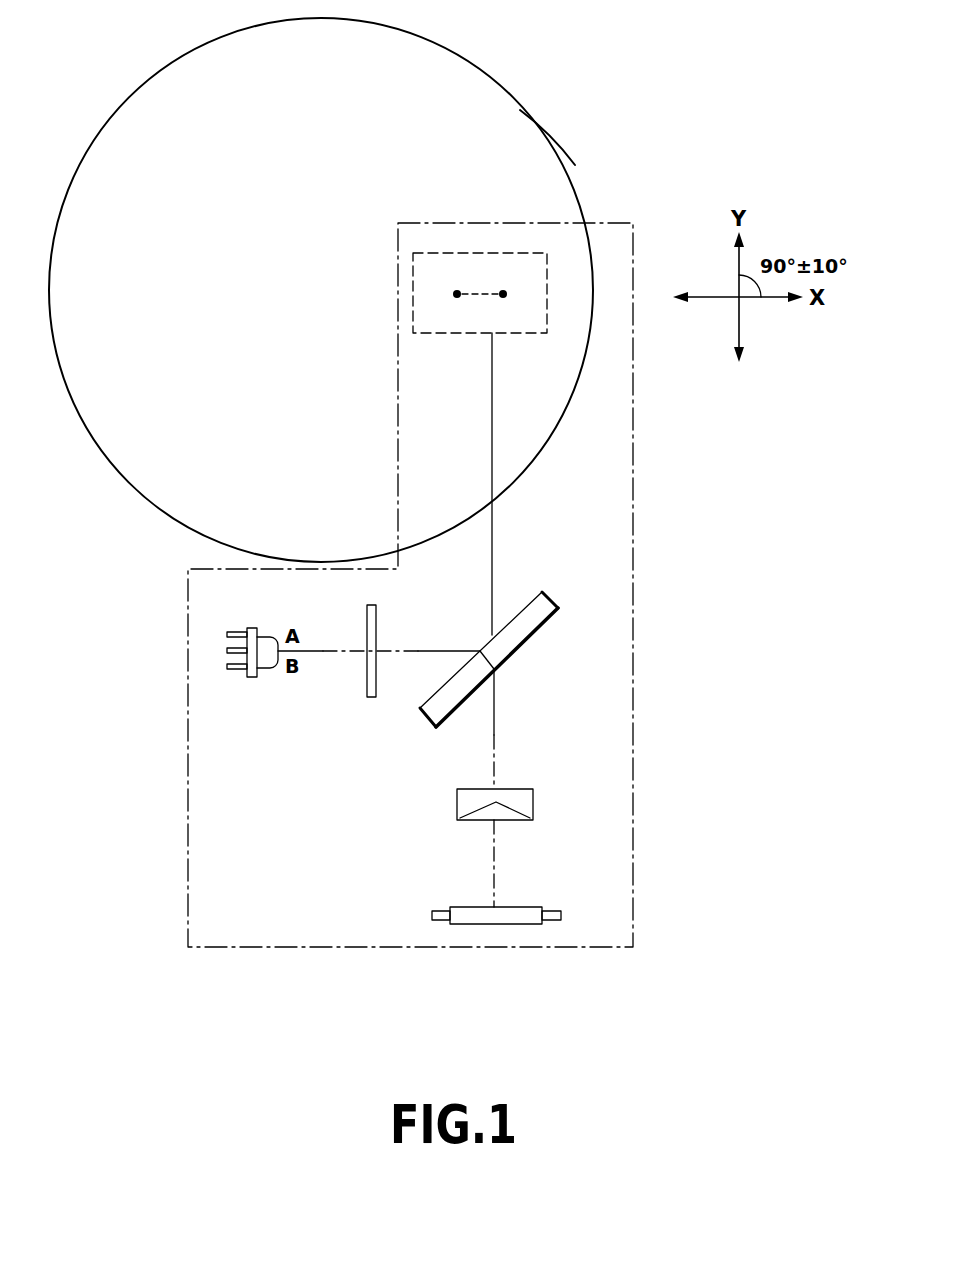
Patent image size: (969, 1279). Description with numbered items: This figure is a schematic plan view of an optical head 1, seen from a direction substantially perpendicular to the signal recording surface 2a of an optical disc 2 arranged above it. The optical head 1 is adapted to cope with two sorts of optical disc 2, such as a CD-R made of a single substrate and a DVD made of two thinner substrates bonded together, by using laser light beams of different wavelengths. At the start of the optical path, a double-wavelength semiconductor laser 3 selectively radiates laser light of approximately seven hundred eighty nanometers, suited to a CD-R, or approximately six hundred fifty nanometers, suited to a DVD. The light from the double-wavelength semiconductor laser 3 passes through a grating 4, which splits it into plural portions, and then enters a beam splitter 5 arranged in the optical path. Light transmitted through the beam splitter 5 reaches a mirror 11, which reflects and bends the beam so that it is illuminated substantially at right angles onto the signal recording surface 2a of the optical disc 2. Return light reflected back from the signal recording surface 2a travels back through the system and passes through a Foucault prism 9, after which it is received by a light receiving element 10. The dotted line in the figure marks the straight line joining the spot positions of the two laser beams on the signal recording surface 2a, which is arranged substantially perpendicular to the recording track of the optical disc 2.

The optical head 1 is at (633, 577).
The optical disc 2 is at (132, 92).
The signal recording surface 2a is at (525, 158).
The double-wavelength semiconductor laser 3 is at (252, 677).
The grating 4 is at (372, 697).
The beam splitter 5 is at (523, 643).
The Foucault prism 9 is at (533, 800).
The light receiving element 10 is at (552, 907).
The mirror 11 is at (502, 252).